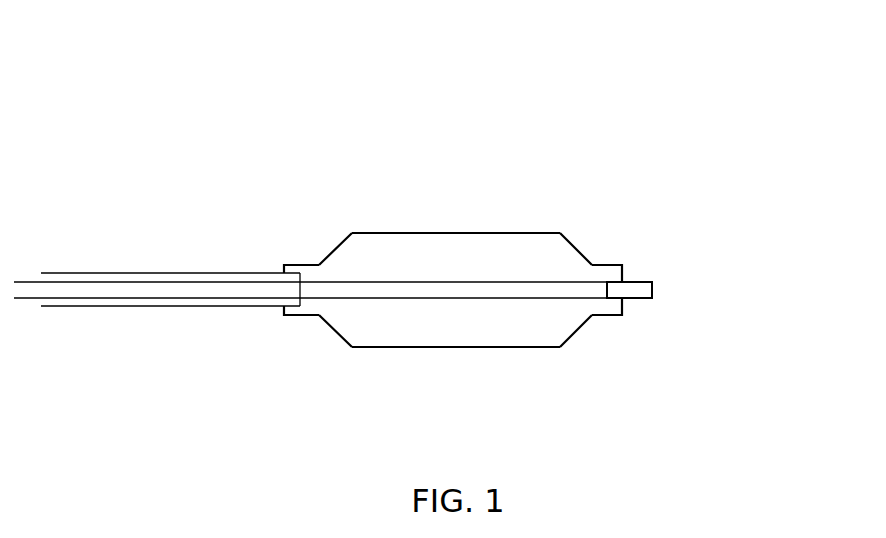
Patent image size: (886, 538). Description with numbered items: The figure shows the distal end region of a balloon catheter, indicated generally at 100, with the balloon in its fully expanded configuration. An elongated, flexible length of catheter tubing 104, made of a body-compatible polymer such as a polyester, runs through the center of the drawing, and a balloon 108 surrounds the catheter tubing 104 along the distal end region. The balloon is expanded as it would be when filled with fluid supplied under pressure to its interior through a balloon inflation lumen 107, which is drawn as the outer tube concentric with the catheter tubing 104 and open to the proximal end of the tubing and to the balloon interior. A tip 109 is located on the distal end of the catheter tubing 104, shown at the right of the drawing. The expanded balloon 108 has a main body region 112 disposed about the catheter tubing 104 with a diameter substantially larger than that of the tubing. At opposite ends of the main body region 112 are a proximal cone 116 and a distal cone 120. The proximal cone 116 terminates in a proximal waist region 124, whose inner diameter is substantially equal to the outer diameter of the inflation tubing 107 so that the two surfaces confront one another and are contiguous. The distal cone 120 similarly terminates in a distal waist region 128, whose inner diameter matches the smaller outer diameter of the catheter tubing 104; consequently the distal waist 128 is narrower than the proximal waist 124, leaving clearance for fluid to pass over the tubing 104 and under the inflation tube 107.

The distal end region of balloon catheter 100 is at (436, 38).
The catheter tubing 104 is at (443, 299).
The balloon inflation lumen 107 is at (152, 306).
The balloon 108 is at (448, 250).
The tip 109 is at (655, 287).
The main body region 112 is at (475, 233).
The proximal cone 116 is at (338, 243).
The distal cone 120 is at (577, 245).
The proximal waist region 124 is at (318, 265).
The distal waist region 128 is at (605, 315).